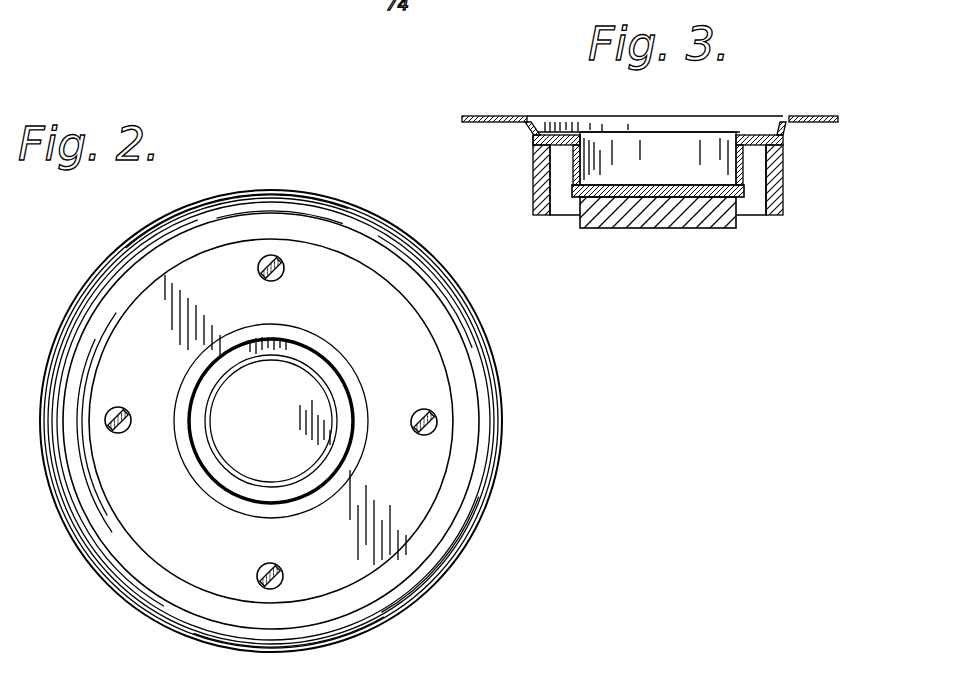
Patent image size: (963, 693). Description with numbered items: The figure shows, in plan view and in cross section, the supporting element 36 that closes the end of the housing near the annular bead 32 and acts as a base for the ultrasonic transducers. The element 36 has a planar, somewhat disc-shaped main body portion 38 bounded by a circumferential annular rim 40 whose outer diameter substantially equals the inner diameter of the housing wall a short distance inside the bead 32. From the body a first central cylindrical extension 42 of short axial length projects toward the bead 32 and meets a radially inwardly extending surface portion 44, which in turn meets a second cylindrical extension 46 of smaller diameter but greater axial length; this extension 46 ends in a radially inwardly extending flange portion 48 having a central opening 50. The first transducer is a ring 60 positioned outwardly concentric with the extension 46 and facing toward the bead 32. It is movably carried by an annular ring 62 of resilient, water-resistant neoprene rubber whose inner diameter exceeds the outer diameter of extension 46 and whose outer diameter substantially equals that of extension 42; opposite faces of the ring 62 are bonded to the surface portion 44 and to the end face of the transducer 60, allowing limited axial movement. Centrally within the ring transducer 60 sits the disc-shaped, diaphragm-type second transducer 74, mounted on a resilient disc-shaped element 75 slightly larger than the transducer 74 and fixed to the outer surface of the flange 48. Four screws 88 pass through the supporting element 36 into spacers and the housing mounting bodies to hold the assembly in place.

In FIG. 2, the annular bead 32 is at (95, 290).
In FIG. 3, the supporting element 36 is at (514, 76).
In FIG. 2, the main body portion 38 is at (440, 470).
In FIG. 2, the annular rim 40 is at (455, 355).
In FIG. 3, the first central cylindrical extension 42 is at (778, 126).
In FIG. 2, the radially inwardly extending surface portion 44 is at (335, 455).
In FIG. 3, the radially inwardly extending surface portion 44 is at (752, 131).
In FIG. 3, the second cylindrical extension 46 is at (583, 160).
In FIG. 3, the radially inwardly extending flange portion 48 is at (708, 178).
In FIG. 3, the central opening 50 is at (696, 180).
In FIG. 2, the first transducer ring 60 is at (345, 368).
In FIG. 3, the first transducer ring 60 is at (785, 163).
In FIG. 3, the resilient annular ring 62 is at (540, 140).
In FIG. 2, the second transducer 74 is at (222, 393).
In FIG. 3, the second transducer 74 is at (662, 230).
In FIG. 2, the disc-shaped mounting element 75 is at (237, 470).
In FIG. 3, the disc-shaped mounting element 75 is at (748, 192).
In FIG. 2, the screws 88 is at (282, 276).